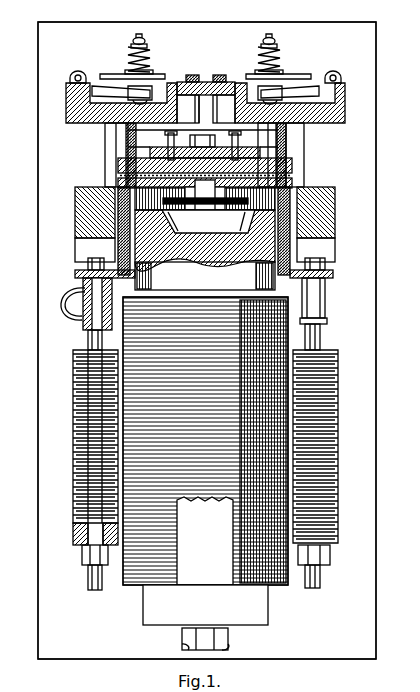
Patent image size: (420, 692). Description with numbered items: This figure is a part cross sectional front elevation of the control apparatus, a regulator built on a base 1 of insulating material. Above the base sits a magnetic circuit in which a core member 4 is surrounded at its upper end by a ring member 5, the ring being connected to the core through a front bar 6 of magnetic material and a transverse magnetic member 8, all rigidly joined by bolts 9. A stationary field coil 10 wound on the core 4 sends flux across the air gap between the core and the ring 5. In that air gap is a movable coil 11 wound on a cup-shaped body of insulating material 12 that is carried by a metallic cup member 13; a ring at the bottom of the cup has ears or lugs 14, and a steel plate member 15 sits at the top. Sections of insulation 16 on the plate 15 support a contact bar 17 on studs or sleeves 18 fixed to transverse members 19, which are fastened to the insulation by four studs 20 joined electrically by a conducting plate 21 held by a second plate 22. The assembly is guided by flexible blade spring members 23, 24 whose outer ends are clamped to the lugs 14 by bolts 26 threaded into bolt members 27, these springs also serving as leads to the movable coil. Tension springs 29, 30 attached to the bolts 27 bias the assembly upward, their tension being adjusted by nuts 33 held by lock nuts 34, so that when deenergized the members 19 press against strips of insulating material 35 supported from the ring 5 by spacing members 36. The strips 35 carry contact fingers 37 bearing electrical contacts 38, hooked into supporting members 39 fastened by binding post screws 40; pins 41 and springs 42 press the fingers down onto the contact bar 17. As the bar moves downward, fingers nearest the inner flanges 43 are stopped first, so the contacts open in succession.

The base 1 is at (370, 385).
The core member 4 is at (205, 276).
The ring member 5 is at (335, 212).
The front bar 6 is at (205, 441).
The transverse magnetic member 8 is at (205, 605).
The bolts 9 is at (228, 640).
The stationary field coil 10 is at (286, 587).
The movable coil 11 is at (118, 248).
The cup-shaped body of insulating material 12 is at (119, 184).
The metallic cup member 13 is at (298, 185).
The ears or lugs 14 is at (80, 273).
The metal plate member 15 is at (292, 186).
The sections of insulation 16 is at (120, 161).
The contact bar 17 is at (188, 109).
The studs or sleeves 18 is at (218, 109).
The transverse members 19 is at (114, 131).
The studs 20 is at (150, 141).
The conducting plate 21 is at (292, 155).
The second plate 22 is at (205, 145).
The blade spring member 23 is at (326, 314).
The blade spring member 24 is at (84, 318).
The bolts 26 is at (90, 264).
The bolt members 27 is at (90, 334).
The tension spring 29 is at (74, 452).
The tension spring 30 is at (338, 456).
The nuts 33 is at (74, 535).
The lock nuts 34 is at (84, 560).
The strips of insulating material 35 is at (66, 105).
The spacing members 36 is at (110, 153).
The contact fingers 37 is at (102, 74).
The electrical contacts 38 is at (216, 75).
The supporting members 39 is at (158, 92).
The binding post screws 40 is at (76, 72).
The pins 41 is at (204, 34).
The springs 42 is at (128, 58).
The inner flanges 43 is at (186, 82).